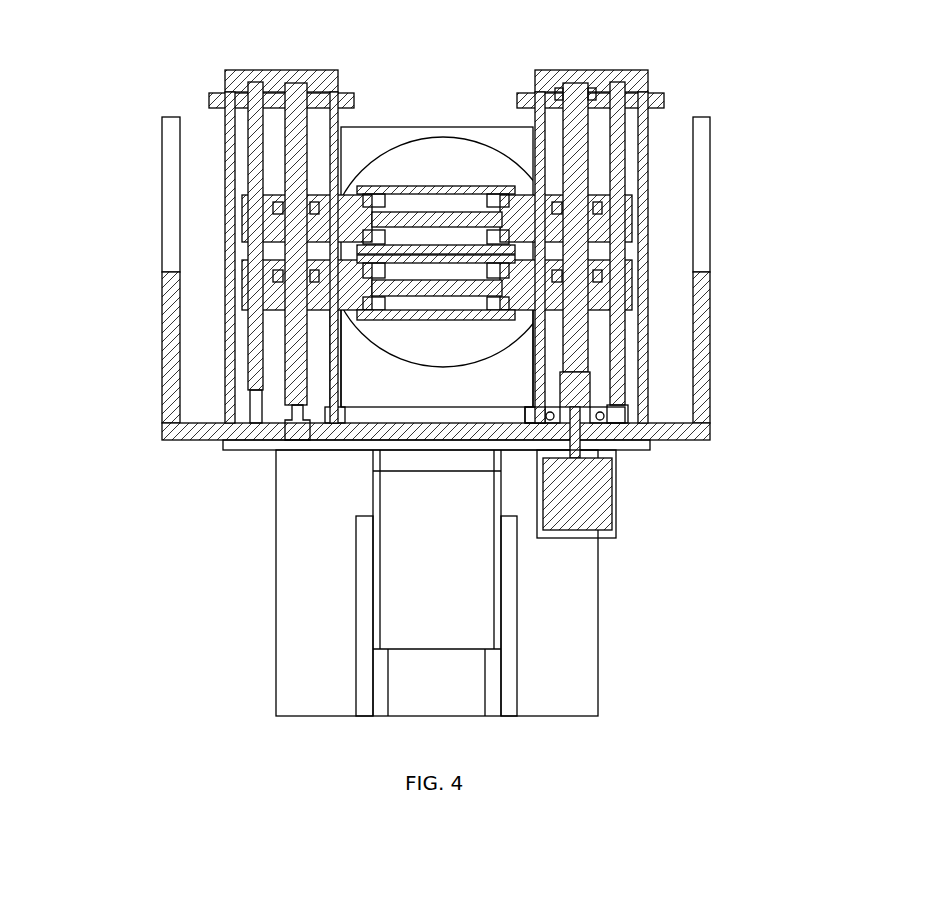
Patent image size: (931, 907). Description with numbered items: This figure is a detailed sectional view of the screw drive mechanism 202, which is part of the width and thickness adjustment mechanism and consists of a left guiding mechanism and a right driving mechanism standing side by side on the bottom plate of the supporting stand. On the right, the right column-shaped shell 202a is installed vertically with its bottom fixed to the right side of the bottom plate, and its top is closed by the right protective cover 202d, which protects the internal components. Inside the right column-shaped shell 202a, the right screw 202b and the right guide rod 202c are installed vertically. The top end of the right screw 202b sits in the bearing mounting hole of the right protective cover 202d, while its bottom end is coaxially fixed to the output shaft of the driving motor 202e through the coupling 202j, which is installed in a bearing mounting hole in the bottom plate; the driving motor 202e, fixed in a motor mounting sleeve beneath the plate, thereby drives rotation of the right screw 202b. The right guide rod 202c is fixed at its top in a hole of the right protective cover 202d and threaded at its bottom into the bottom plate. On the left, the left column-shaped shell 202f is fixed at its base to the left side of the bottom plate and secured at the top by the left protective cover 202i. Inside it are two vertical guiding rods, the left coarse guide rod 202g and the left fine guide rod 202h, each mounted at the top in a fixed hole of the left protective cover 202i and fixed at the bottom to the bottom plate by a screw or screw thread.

The screw drive mechanism 202 is at (200, 145).
The right column-shaped shell 202a is at (646, 298).
The right screw 202b is at (588, 355).
The right guide rod 202c is at (620, 135).
The right protective cover 202d is at (645, 72).
The driving motor 202e is at (587, 503).
The left column-shaped shell 202f is at (233, 222).
The left coarse guide rod 202g is at (283, 340).
The left fine guide rod 202h is at (257, 276).
The left protective cover 202i is at (230, 72).
The coupling 202j is at (590, 398).